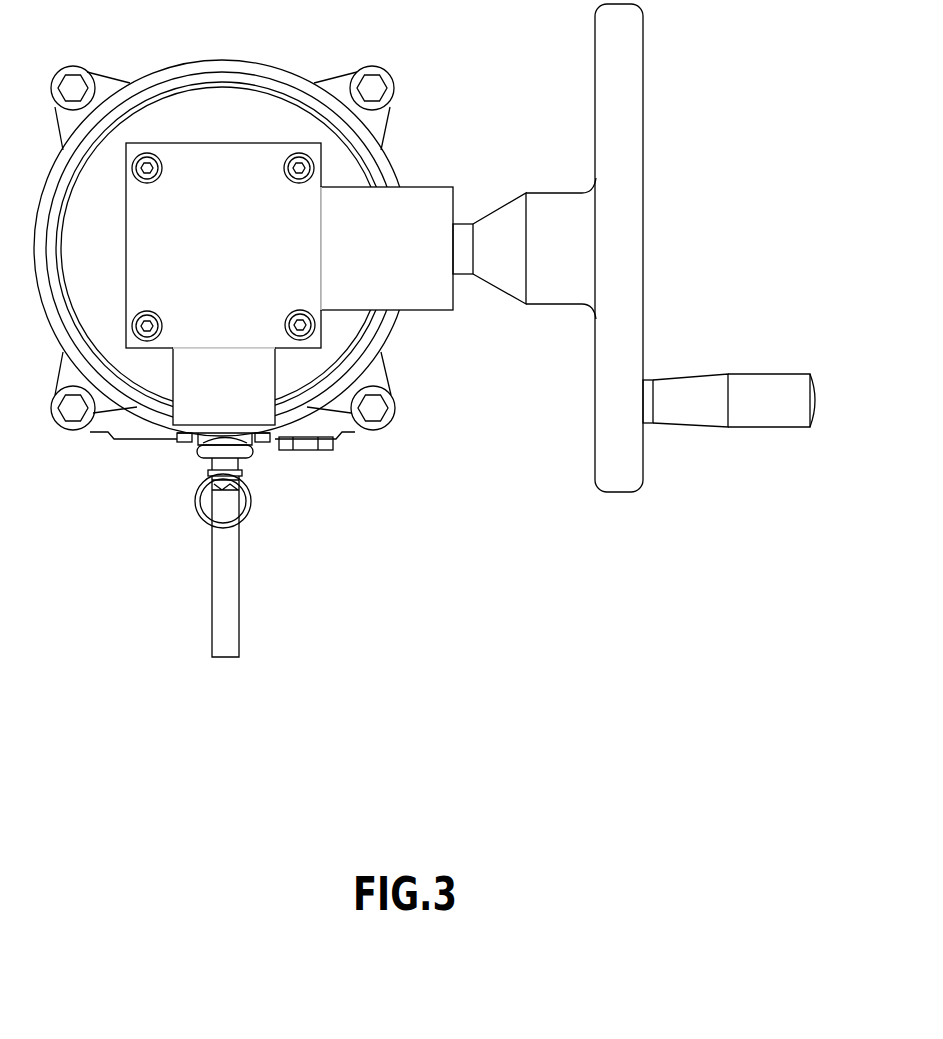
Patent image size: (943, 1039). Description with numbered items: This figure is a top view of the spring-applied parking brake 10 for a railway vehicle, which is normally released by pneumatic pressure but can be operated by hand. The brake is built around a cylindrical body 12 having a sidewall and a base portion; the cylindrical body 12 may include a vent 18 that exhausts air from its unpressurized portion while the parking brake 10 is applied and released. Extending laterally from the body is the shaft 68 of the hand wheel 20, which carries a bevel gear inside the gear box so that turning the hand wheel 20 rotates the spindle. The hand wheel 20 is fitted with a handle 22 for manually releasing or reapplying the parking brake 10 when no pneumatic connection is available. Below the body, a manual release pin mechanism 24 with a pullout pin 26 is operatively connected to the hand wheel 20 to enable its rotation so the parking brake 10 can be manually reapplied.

The parking brake 10 is at (432, 343).
The cylindrical body 12 is at (283, 66).
The vent 18 is at (235, 623).
The hand wheel 20 is at (640, 107).
The handle 22 is at (758, 382).
The manual release pin mechanism 24 is at (195, 545).
The pullout pin 26 is at (250, 518).
The shaft 68 is at (462, 224).